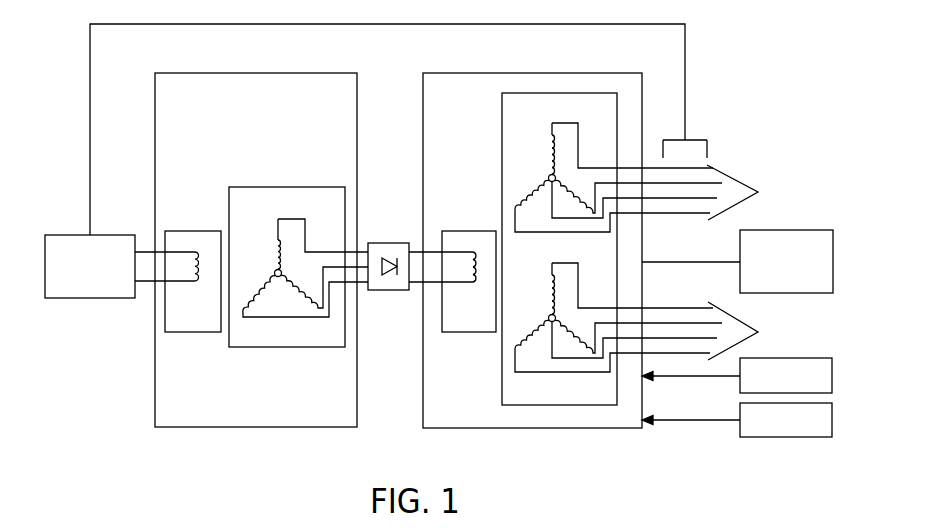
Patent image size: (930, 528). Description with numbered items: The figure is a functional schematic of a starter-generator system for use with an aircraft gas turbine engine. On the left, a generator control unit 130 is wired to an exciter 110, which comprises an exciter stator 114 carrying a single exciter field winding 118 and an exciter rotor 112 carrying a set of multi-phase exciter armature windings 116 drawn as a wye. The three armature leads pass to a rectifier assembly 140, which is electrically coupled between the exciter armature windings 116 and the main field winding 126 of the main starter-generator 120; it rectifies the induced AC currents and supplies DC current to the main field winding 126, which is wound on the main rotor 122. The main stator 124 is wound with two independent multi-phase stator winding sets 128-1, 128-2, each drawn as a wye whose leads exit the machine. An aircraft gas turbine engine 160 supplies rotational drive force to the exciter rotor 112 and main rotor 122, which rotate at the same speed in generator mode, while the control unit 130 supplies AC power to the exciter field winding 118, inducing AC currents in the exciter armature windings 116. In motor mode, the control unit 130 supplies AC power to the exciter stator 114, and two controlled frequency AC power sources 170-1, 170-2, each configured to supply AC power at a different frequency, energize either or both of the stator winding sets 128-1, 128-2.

The exciter 110 is at (257, 73).
The exciter rotor 112 is at (288, 186).
The exciter stator 114 is at (200, 230).
The exciter armature windings 116 is at (277, 233).
The exciter field winding 118 is at (200, 273).
The main starter-generator 120 is at (507, 73).
The main rotor 122 is at (470, 230).
The main stator 124 is at (597, 92).
The main field winding 126 is at (478, 273).
The first stator winding set 128-1 is at (550, 137).
The second stator winding set 128-2 is at (550, 275).
The generator control unit 130 is at (92, 298).
The rectifier assembly 140 is at (385, 292).
The aircraft gas turbine engine 160 is at (798, 228).
The first controlled frequency AC power source 170-1 is at (737, 375).
The second controlled frequency AC power source 170-2 is at (737, 420).